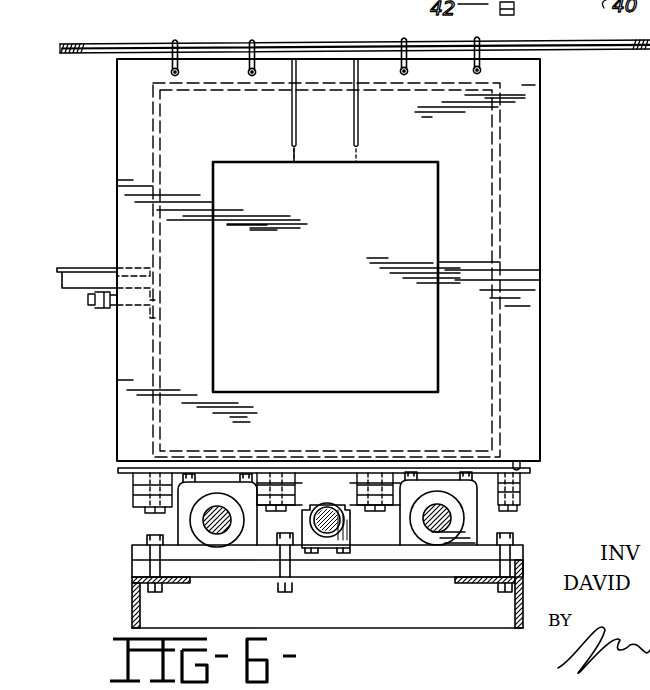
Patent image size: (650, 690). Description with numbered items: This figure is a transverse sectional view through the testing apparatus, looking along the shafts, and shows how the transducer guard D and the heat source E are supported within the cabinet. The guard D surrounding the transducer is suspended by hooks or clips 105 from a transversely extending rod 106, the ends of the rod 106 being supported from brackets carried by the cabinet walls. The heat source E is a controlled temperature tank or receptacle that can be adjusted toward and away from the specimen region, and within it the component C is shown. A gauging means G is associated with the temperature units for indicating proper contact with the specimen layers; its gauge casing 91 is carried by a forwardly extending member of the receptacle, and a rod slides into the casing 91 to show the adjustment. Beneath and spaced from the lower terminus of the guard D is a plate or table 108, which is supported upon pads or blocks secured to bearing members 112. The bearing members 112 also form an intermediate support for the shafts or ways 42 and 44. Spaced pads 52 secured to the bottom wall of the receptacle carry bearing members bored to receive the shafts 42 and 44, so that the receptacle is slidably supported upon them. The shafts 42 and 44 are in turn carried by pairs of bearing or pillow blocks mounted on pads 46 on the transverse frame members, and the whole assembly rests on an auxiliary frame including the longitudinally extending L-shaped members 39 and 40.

The transversely extending rod 106 is at (141, 43).
The hooks or clips 105 is at (176, 40).
The guard D is at (538, 104).
The heat source E is at (500, 187).
The carrier C is at (357, 229).
The gauging means G is at (76, 268).
The gauge casing 91 is at (76, 290).
The plate or table 108 is at (518, 462).
The pads 52 is at (133, 483).
The bearing members 112 is at (133, 494).
The shaft 42 is at (205, 518).
The shaft 44 is at (440, 510).
The pads 46 is at (140, 567).
The L-shaped member 39 is at (133, 601).
The L-shaped member 40 is at (516, 608).